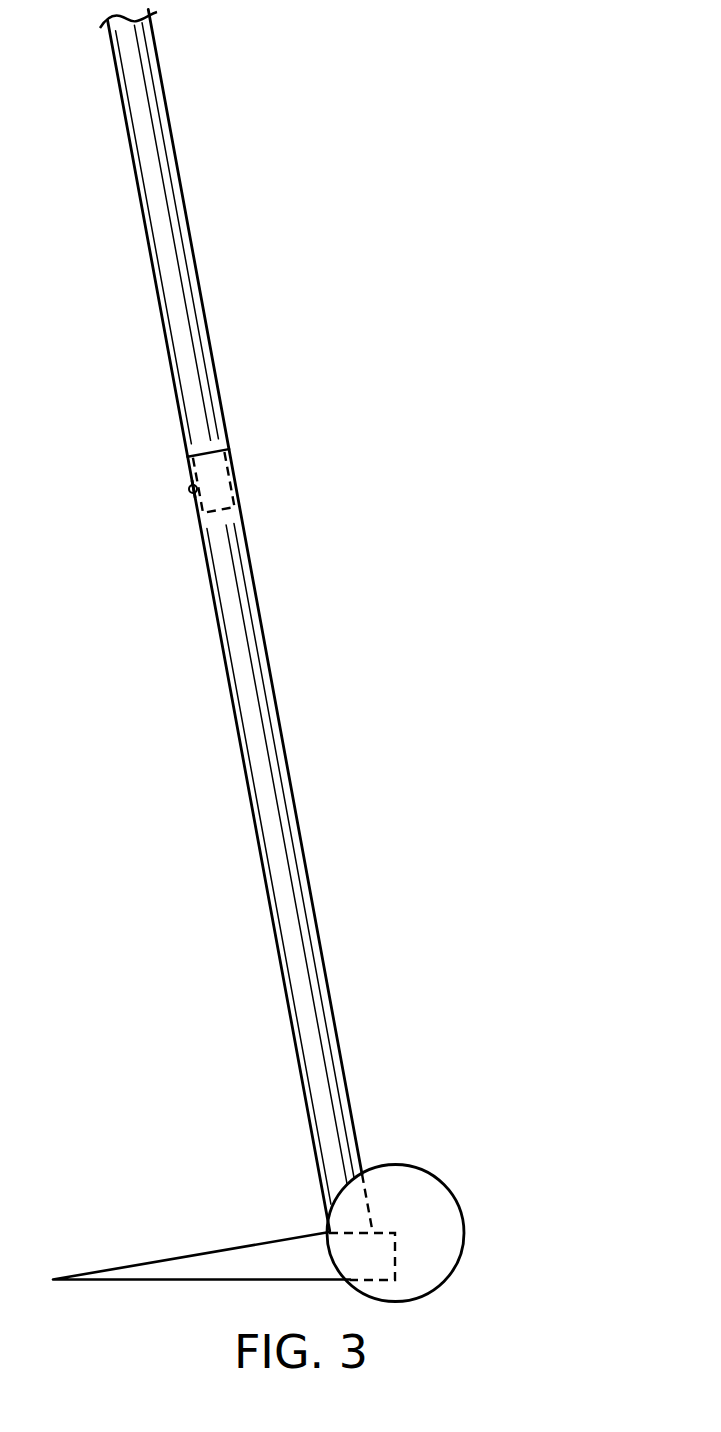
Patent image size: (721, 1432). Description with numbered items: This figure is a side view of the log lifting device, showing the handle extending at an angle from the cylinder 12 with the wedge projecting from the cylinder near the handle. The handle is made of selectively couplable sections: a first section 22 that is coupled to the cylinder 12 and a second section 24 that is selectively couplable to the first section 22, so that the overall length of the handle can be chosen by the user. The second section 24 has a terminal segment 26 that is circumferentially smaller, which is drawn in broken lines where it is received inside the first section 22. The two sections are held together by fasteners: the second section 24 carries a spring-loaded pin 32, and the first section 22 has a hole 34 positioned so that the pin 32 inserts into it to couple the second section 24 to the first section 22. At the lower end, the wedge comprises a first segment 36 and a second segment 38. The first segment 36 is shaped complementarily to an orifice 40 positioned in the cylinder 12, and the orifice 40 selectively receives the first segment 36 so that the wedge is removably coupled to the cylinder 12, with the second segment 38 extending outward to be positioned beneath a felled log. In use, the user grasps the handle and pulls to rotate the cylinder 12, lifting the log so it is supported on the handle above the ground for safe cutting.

The cylinder 12 is at (428, 1170).
The first section 22 is at (253, 670).
The second section 24 is at (180, 222).
The terminal segment 26 is at (223, 488).
The pin 32 is at (187, 495).
The hole 34 is at (191, 487).
The first segment 36 is at (382, 1258).
The second segment 38 is at (208, 1265).
The orifice 40 is at (368, 1270).